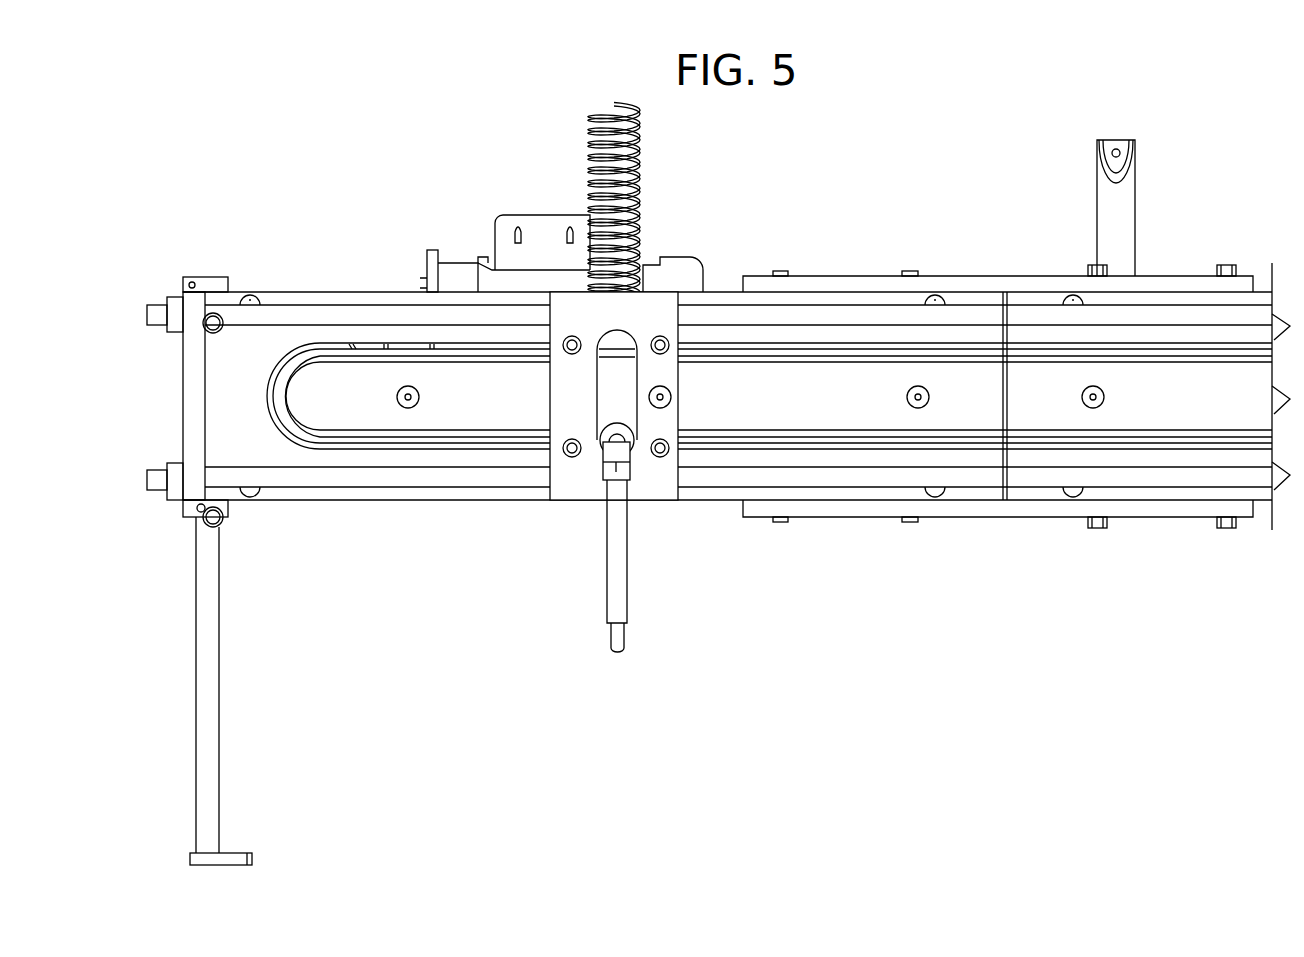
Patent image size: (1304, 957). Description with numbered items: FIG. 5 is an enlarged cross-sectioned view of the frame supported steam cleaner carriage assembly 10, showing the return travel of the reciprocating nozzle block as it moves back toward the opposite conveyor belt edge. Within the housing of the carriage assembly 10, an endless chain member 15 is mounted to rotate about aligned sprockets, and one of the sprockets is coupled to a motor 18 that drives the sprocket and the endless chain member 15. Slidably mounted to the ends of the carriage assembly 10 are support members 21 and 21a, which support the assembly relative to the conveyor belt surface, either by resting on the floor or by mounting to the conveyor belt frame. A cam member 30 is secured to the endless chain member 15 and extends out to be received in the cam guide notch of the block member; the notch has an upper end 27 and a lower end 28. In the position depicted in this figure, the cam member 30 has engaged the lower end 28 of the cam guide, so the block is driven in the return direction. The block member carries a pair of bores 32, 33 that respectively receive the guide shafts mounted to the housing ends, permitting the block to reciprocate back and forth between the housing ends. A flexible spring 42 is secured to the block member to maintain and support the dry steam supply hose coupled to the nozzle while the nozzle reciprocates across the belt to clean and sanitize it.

The carriage assembly 10 is at (889, 208).
The endless chain member 15 is at (370, 354).
The motor 18 is at (487, 283).
The support member 21 is at (236, 853).
The support member 21a is at (219, 670).
The upper end of cam guide notch 27 is at (633, 337).
The lower end of cam guide notch 28 is at (600, 453).
The cam member 30 is at (634, 434).
The bore 32 is at (283, 313).
The bore 33 is at (398, 476).
The flexible spring 42 is at (588, 125).